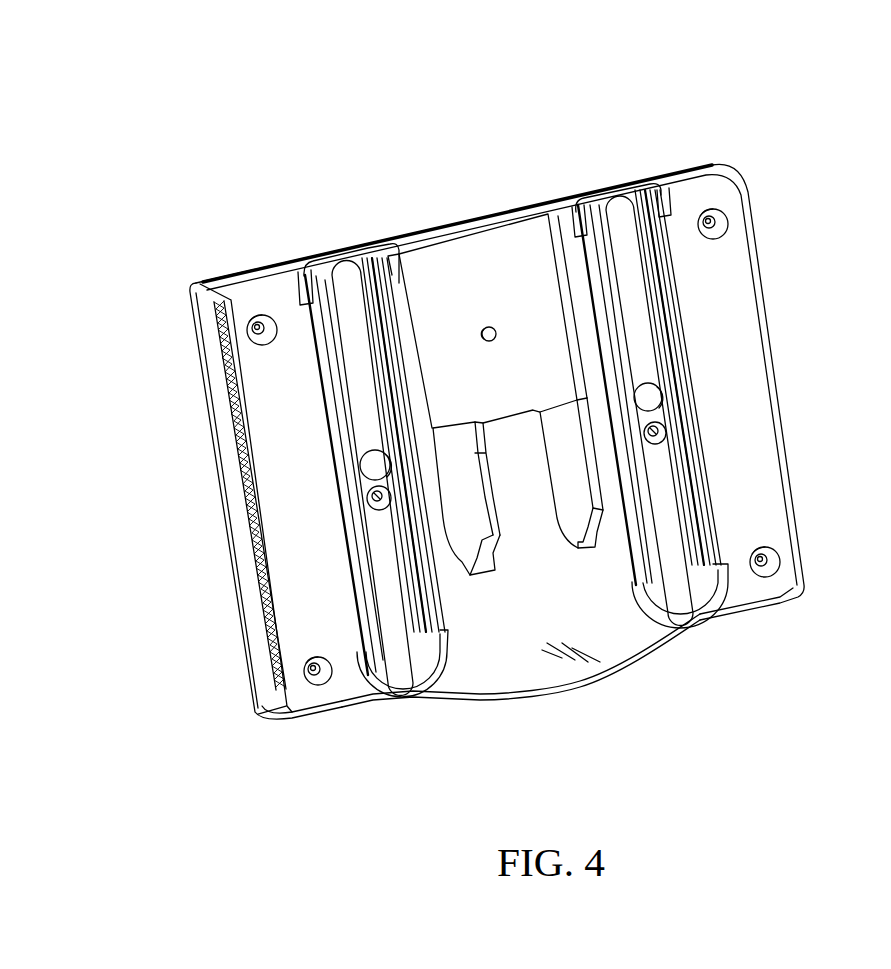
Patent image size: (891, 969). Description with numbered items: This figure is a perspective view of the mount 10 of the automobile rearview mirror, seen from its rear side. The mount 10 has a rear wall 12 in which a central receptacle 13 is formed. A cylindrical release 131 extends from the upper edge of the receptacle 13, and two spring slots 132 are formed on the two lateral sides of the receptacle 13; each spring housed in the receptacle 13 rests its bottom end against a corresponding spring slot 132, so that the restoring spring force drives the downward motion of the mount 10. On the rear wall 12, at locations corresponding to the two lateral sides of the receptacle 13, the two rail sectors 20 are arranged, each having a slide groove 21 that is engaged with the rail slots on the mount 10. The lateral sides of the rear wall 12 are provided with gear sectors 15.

The mount 10 is at (737, 343).
The rear wall 12 is at (598, 590).
The central receptacle 13 is at (457, 270).
The cylindrical release 131 is at (492, 327).
The spring slots 132 is at (468, 520).
The gear sectors 15 is at (235, 453).
The rail sectors 20 is at (363, 252).
The slide groove 21 is at (350, 348).